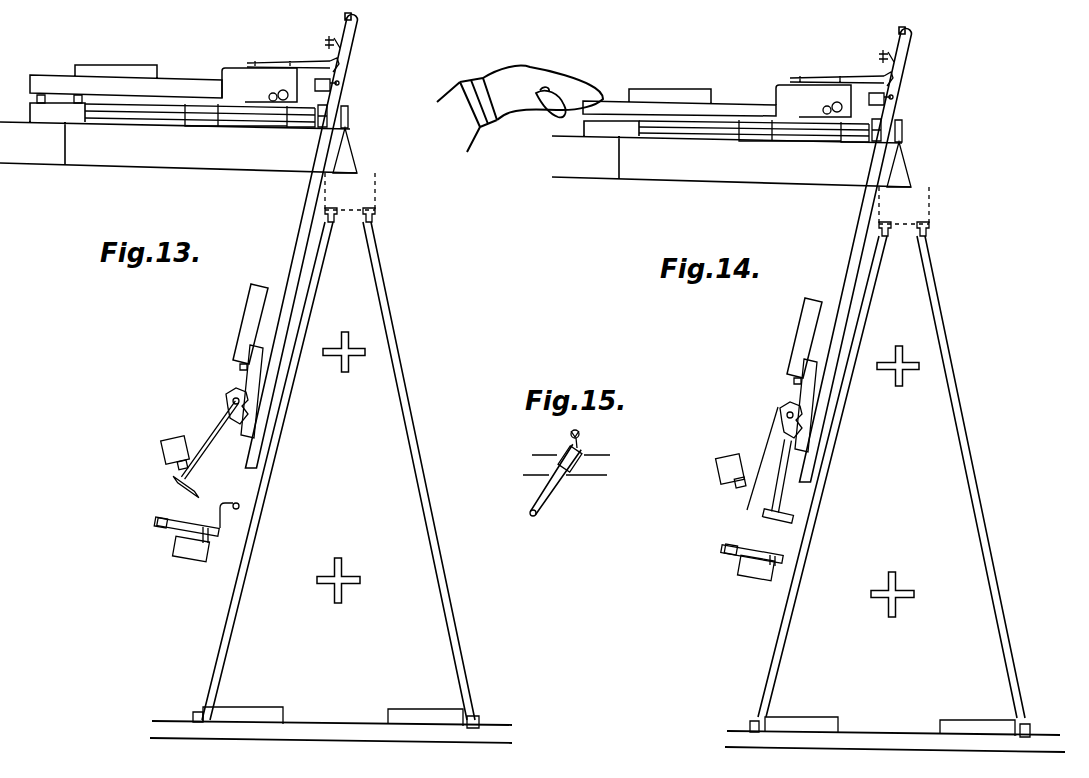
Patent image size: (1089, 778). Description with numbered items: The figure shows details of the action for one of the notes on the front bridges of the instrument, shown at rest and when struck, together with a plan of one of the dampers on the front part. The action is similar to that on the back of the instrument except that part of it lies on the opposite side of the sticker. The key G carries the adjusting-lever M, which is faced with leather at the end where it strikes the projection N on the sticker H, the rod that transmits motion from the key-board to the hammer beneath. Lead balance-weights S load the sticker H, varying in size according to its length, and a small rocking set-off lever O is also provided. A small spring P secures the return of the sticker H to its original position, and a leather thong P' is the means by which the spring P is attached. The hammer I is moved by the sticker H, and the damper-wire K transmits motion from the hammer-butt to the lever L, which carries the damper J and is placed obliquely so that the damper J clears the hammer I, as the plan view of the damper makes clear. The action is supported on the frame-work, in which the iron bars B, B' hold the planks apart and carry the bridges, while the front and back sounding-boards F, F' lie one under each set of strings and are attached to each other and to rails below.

In FIG. 13, the key G is at (126, 79).
In FIG. 14, the key G is at (679, 98).
In FIG. 13, the adjusting-lever M is at (293, 55).
In FIG. 14, the adjusting-lever M is at (841, 71).
In FIG. 13, the projection N is at (338, 47).
In FIG. 14, the projection N is at (891, 60).
In FIG. 13, the lead balance-weights S is at (259, 85).
In FIG. 14, the lead balance-weights S is at (813, 101).
In FIG. 13, the set-off lever O is at (319, 82).
In FIG. 14, the set-off lever O is at (873, 96).
In FIG. 13, the spring P is at (351, 115).
In FIG. 14, the spring P is at (905, 129).
In FIG. 13, the leather thong P' is at (306, 129).
In FIG. 14, the leather thong P' is at (863, 144).
In FIG. 13, the sticker H is at (304, 209).
In FIG. 14, the sticker H is at (860, 227).
In FIG. 13, the bar B is at (344, 356).
In FIG. 14, the bar B is at (898, 370).
In FIG. 13, the bar B' is at (340, 583).
In FIG. 14, the bar B' is at (893, 597).
In FIG. 13, the front sounding-board F is at (267, 471).
In FIG. 14, the front sounding-board F is at (822, 476).
In FIG. 13, the back sounding-board F' is at (419, 471).
In FIG. 14, the back sounding-board F' is at (971, 477).
In FIG. 13, the hammer I is at (210, 443).
In FIG. 14, the hammer I is at (783, 462).
In FIG. 13, the damper J is at (229, 505).
In FIG. 13, the damper-wire K is at (176, 500).
In FIG. 14, the damper-wire K is at (744, 513).
In FIG. 13, the lever carrying the damper L is at (186, 533).
In FIG. 14, the lever carrying the damper L is at (752, 556).